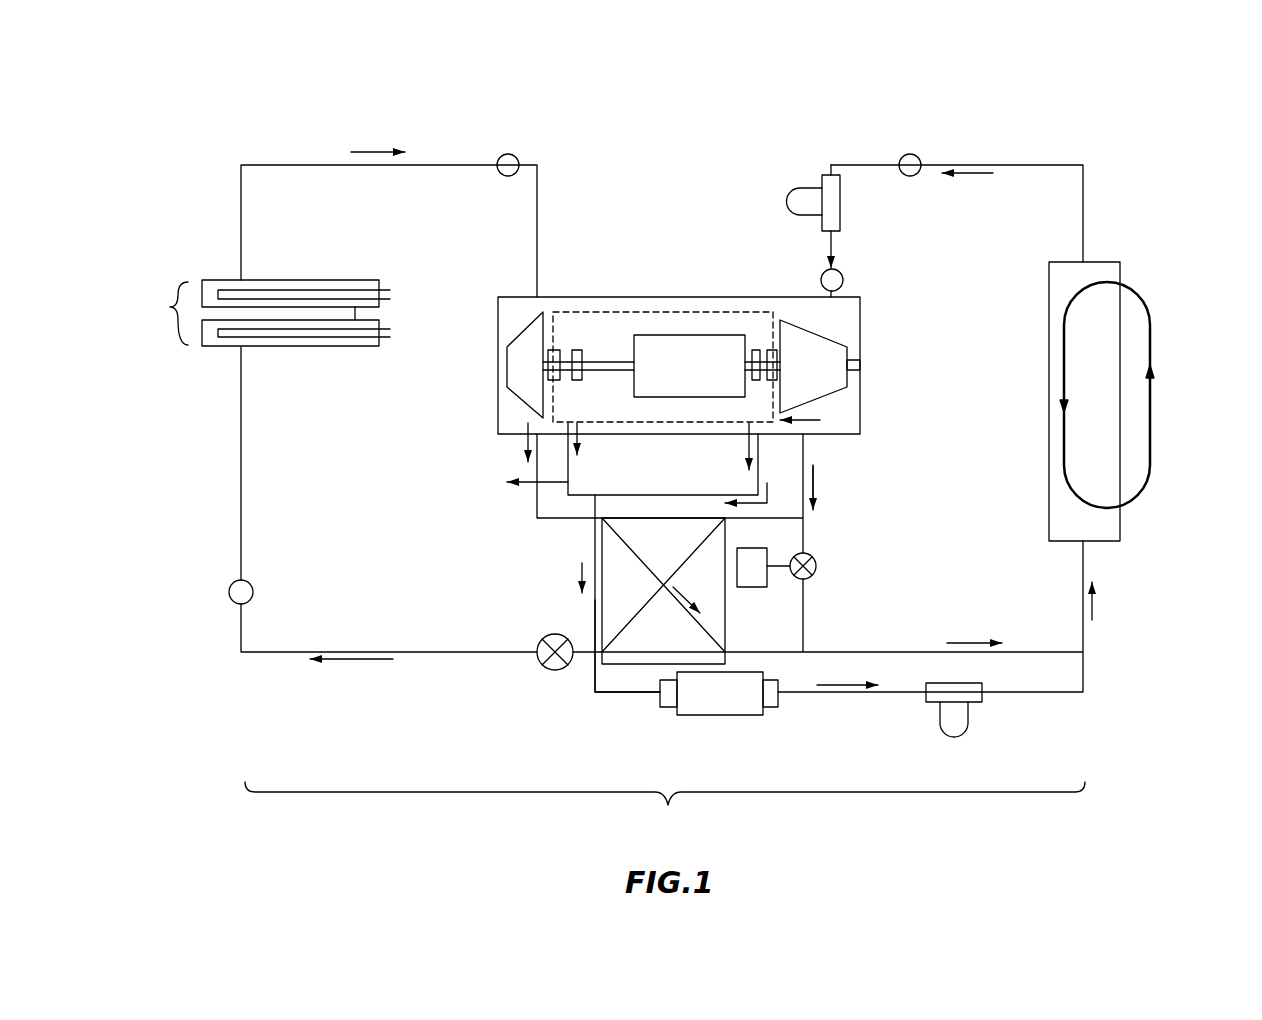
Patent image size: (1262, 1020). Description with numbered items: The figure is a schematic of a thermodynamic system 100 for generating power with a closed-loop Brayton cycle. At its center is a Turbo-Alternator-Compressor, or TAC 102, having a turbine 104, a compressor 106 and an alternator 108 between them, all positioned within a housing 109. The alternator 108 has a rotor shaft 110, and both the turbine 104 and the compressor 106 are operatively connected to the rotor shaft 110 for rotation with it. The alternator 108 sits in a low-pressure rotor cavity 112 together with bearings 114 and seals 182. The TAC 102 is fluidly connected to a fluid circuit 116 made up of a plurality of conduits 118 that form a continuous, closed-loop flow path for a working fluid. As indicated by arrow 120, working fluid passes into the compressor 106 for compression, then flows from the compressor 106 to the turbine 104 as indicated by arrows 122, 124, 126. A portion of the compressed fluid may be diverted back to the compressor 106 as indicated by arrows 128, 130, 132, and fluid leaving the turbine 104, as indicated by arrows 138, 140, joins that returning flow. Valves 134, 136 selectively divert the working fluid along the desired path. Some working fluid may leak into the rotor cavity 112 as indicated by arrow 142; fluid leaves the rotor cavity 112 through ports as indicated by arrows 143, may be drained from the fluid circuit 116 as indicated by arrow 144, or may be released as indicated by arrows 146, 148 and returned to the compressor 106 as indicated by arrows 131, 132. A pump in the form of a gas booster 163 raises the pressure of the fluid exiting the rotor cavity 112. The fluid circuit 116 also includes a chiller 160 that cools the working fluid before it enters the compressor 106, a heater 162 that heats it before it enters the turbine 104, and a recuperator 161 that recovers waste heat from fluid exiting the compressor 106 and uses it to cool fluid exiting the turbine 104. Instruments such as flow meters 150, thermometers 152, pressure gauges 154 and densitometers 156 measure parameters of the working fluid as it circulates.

The thermodynamic system 100 is at (1165, 133).
The Turbo-Alternator-Compressor (TAC) 102 is at (663, 331).
The turbine 104 is at (510, 345).
The compressor 106 is at (860, 373).
The alternator 108 is at (690, 335).
The housing 109 is at (862, 320).
The rotor shaft 110 is at (626, 356).
The rotor pressure cavity 112 is at (645, 312).
The bearings 114 is at (758, 350).
The fluid circuit 116 is at (668, 805).
The conduits 118 is at (248, 165).
The arrow 120 is at (840, 265).
The arrow 122 is at (790, 492).
The arrow 124 is at (352, 660).
The arrow 126 is at (378, 152).
The arrow 128 is at (815, 490).
The arrow 130 is at (960, 640).
The arrow 131 is at (1093, 612).
The arrow 132 is at (982, 173).
The valve 134 is at (817, 563).
The valve 136 is at (543, 666).
The arrow 138 is at (526, 443).
The arrow 140 is at (678, 592).
The arrow 142 is at (822, 420).
The arrows 143 is at (578, 426).
The arrow 144 is at (530, 485).
The arrow 146 is at (582, 572).
The arrow 148 is at (848, 683).
The flow meters 150 is at (794, 195).
The thermometers 152 is at (516, 158).
The pressure gauges 154 is at (231, 584).
The densitometers 156 is at (843, 282).
The chiller 160 is at (1120, 523).
The recuperator 161 is at (627, 665).
The heater 162 is at (172, 307).
The gas booster 163 is at (758, 716).
The seals 182 is at (556, 350).